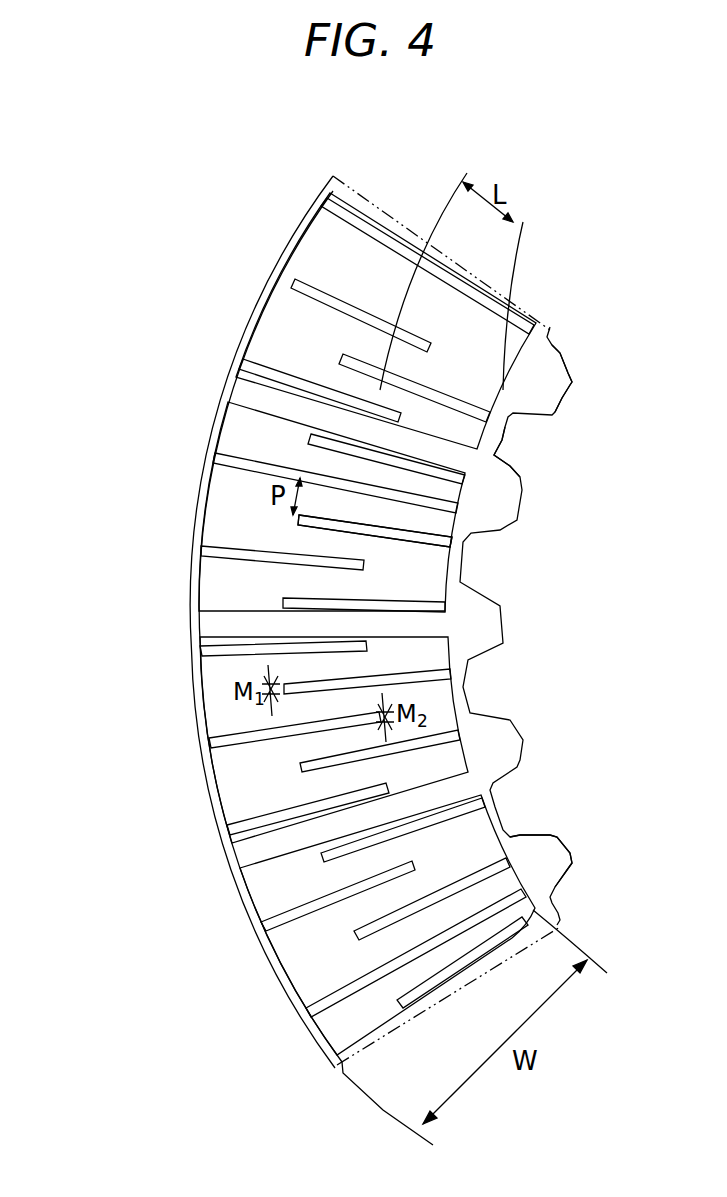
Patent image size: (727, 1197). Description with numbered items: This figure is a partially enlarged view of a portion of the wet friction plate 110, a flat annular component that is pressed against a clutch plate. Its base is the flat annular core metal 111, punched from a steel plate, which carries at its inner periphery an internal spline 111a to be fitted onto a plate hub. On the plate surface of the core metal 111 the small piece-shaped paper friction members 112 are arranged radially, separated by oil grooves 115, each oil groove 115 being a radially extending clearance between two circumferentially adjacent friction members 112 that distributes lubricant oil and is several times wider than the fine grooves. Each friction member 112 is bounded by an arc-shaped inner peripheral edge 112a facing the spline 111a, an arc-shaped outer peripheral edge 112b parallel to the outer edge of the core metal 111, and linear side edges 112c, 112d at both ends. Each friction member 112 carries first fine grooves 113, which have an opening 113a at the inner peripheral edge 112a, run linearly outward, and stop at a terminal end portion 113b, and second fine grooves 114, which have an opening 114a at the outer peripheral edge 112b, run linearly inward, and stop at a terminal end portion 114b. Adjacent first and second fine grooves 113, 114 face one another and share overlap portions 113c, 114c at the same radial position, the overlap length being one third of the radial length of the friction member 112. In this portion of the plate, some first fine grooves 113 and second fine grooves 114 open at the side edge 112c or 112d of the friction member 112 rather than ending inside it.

The wet friction plate 110 is at (184, 151).
The core metal 111 is at (213, 388).
The internal spline 111a is at (563, 850).
The friction member 112 is at (254, 322).
The inner peripheral edge 112a is at (568, 395).
The outer peripheral edge 112b is at (305, 240).
The side edge 112c is at (506, 303).
The side edge 112d is at (434, 462).
The first fine groove 113 is at (524, 358).
The opening 113a is at (470, 545).
The terminal end portion 113b is at (298, 517).
The overlap portion 113c is at (323, 524).
The second fine groove 114 is at (388, 215).
The opening 114a is at (213, 453).
The terminal end portion 114b is at (463, 513).
The overlap portion 114c is at (313, 557).
The oil groove 115 is at (222, 623).